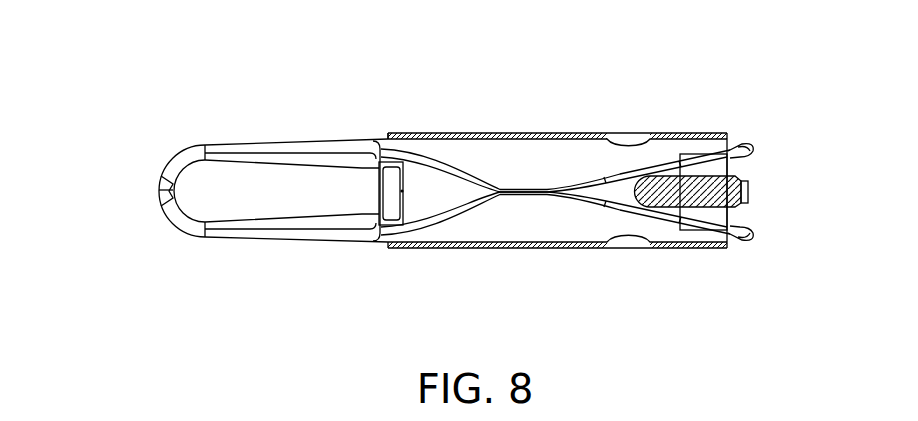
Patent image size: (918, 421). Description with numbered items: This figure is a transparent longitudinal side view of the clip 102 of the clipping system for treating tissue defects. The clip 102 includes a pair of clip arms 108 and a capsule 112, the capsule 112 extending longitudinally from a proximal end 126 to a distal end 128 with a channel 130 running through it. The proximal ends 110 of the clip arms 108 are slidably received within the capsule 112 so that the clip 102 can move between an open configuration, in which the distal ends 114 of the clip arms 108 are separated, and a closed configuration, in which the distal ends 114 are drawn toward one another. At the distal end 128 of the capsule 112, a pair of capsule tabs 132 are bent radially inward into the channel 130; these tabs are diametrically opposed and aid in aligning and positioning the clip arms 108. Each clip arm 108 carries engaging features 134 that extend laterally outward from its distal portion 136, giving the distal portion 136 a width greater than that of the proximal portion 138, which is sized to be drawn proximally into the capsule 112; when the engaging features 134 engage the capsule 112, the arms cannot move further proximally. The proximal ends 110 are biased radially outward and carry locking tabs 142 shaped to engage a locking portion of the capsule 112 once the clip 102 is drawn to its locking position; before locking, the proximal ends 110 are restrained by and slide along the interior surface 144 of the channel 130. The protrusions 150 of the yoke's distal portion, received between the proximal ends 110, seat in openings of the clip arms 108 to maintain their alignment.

The clip 102 is at (505, 85).
The clip arms 108 is at (243, 220).
The proximal ends 110 is at (744, 141).
The capsule 112 is at (470, 133).
The distal ends 114 is at (140, 198).
The proximal end 126 is at (717, 248).
The distal end 128 is at (392, 133).
The channel 130 is at (512, 163).
The capsule tabs 132 is at (390, 202).
The engaging features 134 is at (325, 223).
The distal portion 136 is at (297, 238).
The proximal portion 138 is at (563, 178).
The locking tab 142 is at (734, 141).
The interior surface 144 is at (540, 228).
The protrusions 150 is at (703, 173).